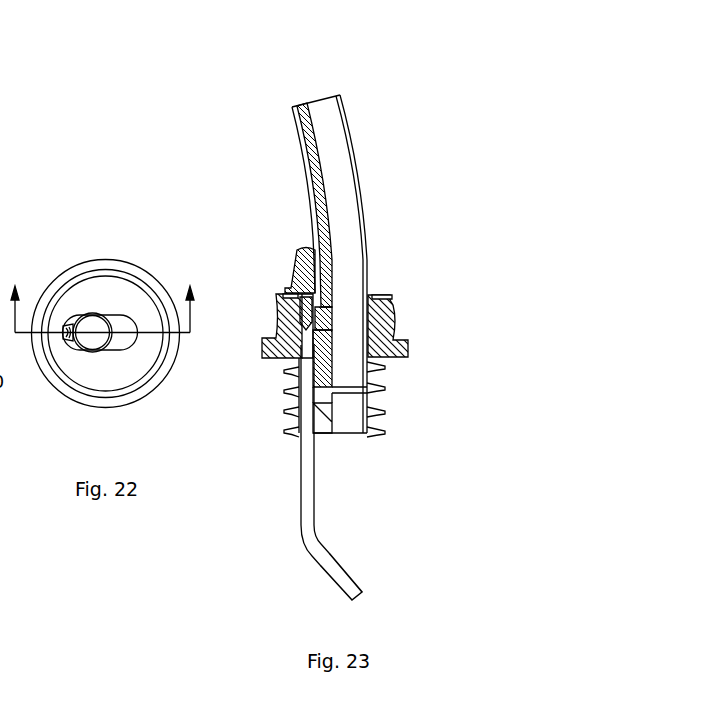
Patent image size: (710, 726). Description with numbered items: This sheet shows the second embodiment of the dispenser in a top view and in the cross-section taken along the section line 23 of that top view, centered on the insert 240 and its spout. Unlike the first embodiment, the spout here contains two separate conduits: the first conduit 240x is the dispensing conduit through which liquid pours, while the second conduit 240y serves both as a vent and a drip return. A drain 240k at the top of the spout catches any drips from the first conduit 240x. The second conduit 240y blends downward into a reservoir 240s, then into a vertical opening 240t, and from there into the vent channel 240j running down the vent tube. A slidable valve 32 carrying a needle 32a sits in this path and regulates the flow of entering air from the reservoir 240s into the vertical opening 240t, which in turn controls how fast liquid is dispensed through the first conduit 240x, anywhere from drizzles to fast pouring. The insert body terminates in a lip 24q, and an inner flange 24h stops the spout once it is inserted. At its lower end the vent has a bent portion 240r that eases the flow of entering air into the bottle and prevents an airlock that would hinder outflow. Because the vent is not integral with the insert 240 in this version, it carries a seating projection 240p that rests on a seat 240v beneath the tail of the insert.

In FIG. 22, the insert 240 is at (100, 268).
In FIG. 22, the section line 23- 23 is at (104, 300).
In FIG. 23, the second conduit 240y is at (304, 132).
In FIG. 23, the drain 240k is at (303, 106).
In FIG. 23, the first conduit 240x is at (340, 177).
In FIG. 23, the slidable valve 32 is at (305, 253).
In FIG. 23, the needle 32a is at (303, 302).
In FIG. 23, the reservoir 240s is at (322, 315).
In FIG. 23, the vertical opening 240t is at (308, 345).
In FIG. 23, the lip 24q is at (392, 298).
In FIG. 23, the inner flange 24h is at (372, 390).
In FIG. 23, the seat 240v is at (332, 410).
In FIG. 23, the seating projection 240p is at (322, 425).
In FIG. 23, the vent channel 240j is at (320, 538).
In FIG. 23, the bent portion 240r is at (348, 574).